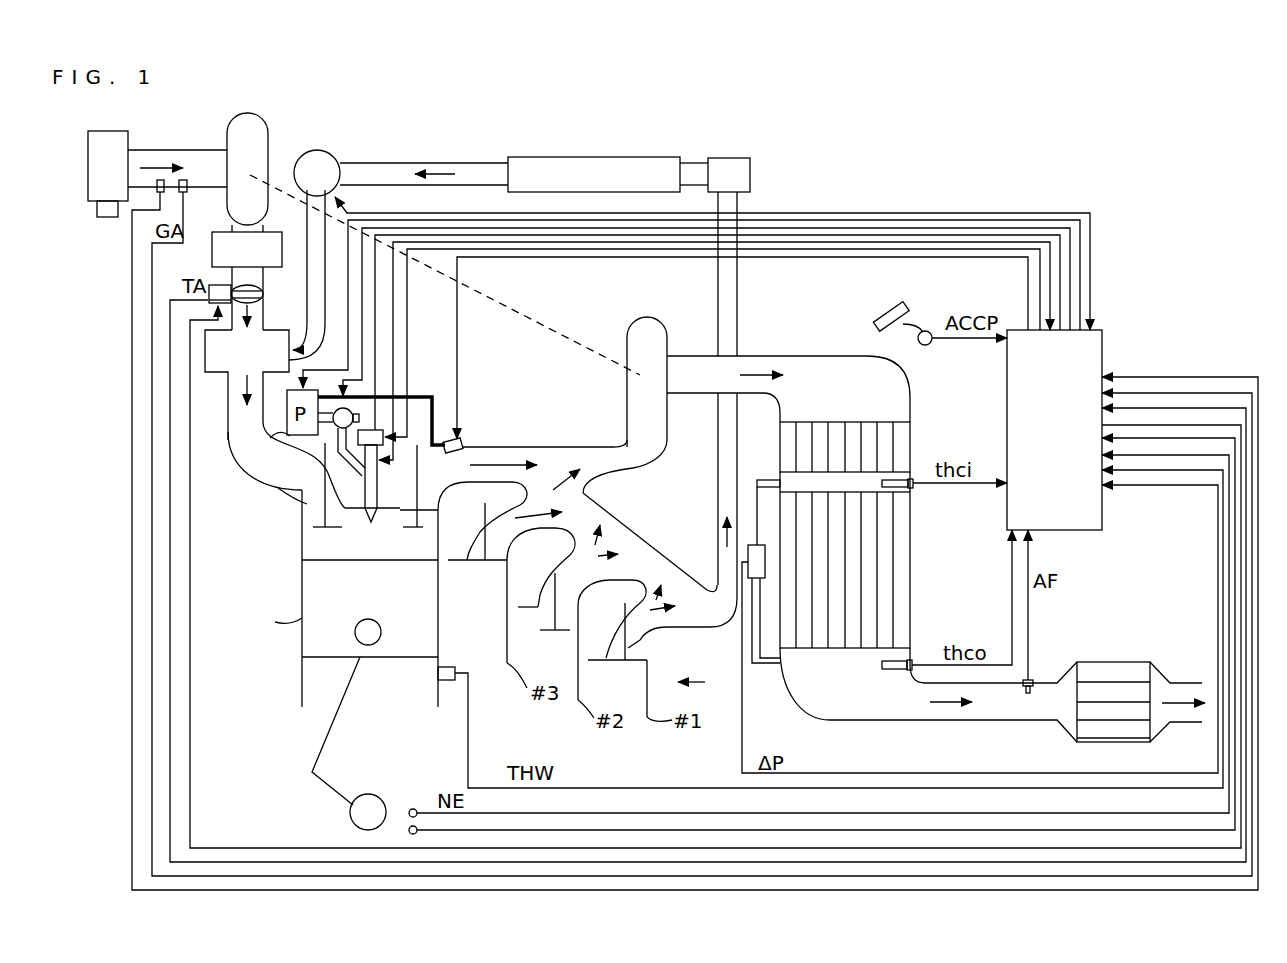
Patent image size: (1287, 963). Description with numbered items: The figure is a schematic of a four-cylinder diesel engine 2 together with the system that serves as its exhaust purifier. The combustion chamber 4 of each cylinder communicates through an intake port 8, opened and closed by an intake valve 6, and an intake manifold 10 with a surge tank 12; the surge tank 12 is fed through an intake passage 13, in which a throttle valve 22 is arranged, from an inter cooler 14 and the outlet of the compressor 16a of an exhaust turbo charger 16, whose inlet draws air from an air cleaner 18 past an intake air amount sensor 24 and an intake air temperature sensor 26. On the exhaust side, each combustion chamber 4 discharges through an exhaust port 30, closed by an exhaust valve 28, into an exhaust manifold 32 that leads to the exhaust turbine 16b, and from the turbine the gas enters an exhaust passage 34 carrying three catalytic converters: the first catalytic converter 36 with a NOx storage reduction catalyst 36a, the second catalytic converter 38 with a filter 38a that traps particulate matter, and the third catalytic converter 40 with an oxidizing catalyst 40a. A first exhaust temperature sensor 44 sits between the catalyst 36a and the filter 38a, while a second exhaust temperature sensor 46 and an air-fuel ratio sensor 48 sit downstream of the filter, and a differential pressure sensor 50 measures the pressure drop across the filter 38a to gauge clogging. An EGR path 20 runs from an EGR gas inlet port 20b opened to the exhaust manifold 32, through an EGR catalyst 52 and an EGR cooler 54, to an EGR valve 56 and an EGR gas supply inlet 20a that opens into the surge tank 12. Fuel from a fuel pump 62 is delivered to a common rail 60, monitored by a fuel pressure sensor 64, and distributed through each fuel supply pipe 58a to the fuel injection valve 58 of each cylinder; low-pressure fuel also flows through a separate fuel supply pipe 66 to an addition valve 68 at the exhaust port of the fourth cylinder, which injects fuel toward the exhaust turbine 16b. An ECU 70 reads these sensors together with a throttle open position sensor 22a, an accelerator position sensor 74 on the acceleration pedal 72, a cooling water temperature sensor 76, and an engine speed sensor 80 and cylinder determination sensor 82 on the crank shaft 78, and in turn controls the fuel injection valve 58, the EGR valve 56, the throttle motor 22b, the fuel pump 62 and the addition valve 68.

The diesel engine 2 is at (725, 699).
The combustion chamber 4 is at (302, 550).
The intake valve 6 is at (340, 540).
The intake port 8 is at (272, 474).
The intake manifold 10 is at (238, 467).
The surge tank 12 is at (207, 380).
The intake passage 13 is at (263, 317).
The inter cooler 14 is at (212, 252).
The exhaust turbo charger 16 is at (517, 322).
The compressor 16a is at (227, 122).
The exhaust turbine 16b is at (646, 317).
The air cleaner 18 is at (128, 134).
The EGR path 20 is at (454, 160).
The EGR gas supply inlet 20a is at (285, 354).
The EGR gas inlet port 20b is at (703, 583).
The throttle valve 22 is at (262, 289).
The throttle open position sensor 22a is at (209, 292).
The motor 22b is at (209, 300).
The intake air amount sensor 24 is at (185, 193).
The intake air temperature sensor 26 is at (158, 193).
The exhaust valve 28 is at (632, 680).
The exhaust port 30 is at (440, 498).
The exhaust manifold 32 is at (615, 523).
The exhaust passage 34 is at (700, 355).
The first catalytic converter 36 is at (910, 440).
The NOx storage reduction catalyst 36a is at (877, 437).
The second catalytic converter 38 is at (910, 545).
The filter 38a is at (872, 582).
The third catalytic converter 40 is at (1097, 660).
The oxidizing catalyst 40a is at (1130, 692).
The first exhaust temperature sensor 44 is at (913, 490).
The second exhaust temperature sensor 46 is at (912, 660).
The air-fuel ratio sensor 48 is at (1030, 678).
The differential pressure sensor 50 is at (752, 545).
The EGR catalyst 52 is at (727, 158).
The EGR cooler 54 is at (594, 157).
The EGR valve 56 is at (325, 152).
The fuel injection valve 58 is at (378, 486).
The fuel supply pipe 58a is at (292, 509).
The common rail 60 is at (350, 409).
The fuel pump 62 is at (228, 437).
The fuel pressure sensor 64 is at (372, 431).
The fuel supply pipe 66 is at (432, 395).
The addition valve 68 is at (462, 440).
The electronic control unit 70 is at (1102, 348).
The acceleration pedal 72 is at (912, 303).
The accelerator position sensor 74 is at (927, 346).
The cooling water temperature sensor 76 is at (450, 666).
The crank shaft 78 is at (376, 795).
The engine speed sensor 80 is at (411, 808).
The cylinder determination sensor 82 is at (409, 830).